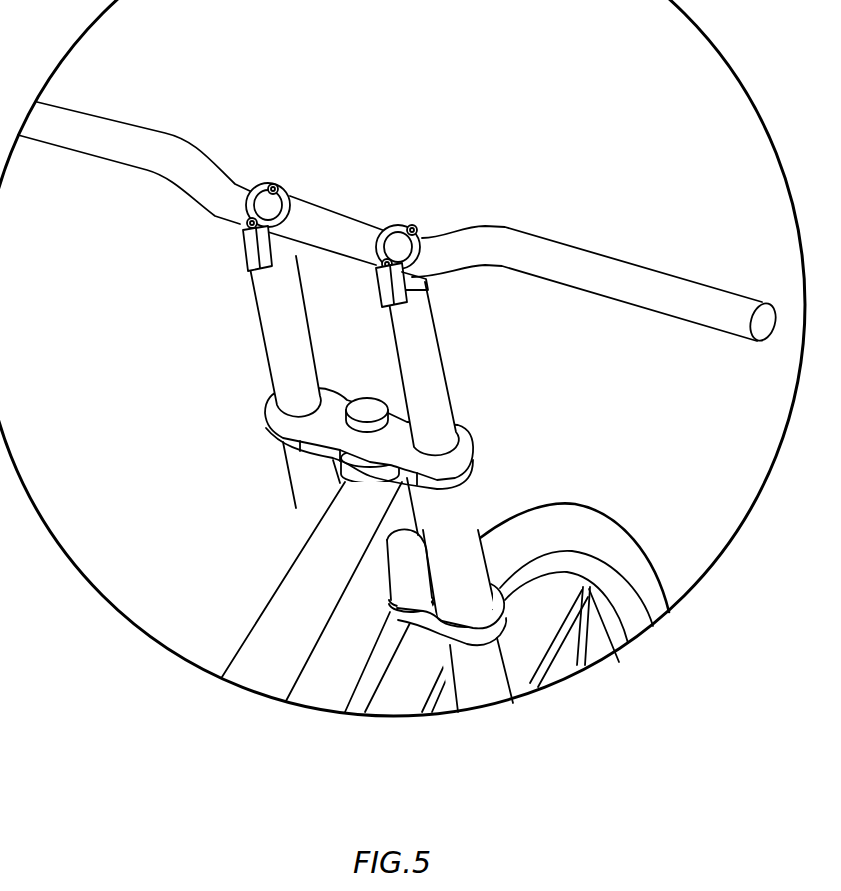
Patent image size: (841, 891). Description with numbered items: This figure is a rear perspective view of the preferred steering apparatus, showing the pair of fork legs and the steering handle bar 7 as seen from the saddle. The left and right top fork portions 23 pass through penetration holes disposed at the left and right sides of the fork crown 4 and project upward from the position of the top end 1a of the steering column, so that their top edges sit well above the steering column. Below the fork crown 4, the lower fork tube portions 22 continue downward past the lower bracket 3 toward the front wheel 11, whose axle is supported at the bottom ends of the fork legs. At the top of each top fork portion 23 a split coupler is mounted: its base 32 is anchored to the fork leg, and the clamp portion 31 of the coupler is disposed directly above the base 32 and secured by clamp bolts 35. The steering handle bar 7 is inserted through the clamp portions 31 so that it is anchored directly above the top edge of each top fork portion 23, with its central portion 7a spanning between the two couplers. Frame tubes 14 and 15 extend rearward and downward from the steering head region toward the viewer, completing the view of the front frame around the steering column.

The steering handle bar 7 is at (399, 211).
The handlebar central portion 7a is at (335, 224).
The handlebar clamp 31 is at (262, 188).
The clamp bolt 35 is at (280, 184).
The split coupler base 32 is at (234, 256).
The top fork portion 23 is at (273, 338).
The fork outer tube 22 is at (300, 496).
The top end of the steering column 1a is at (366, 396).
The fork crown 4 is at (475, 457).
The lower bracket 3 is at (498, 620).
The front wheel 11 is at (622, 534).
The main frame tube 14 is at (297, 588).
The down frame tube 15 is at (320, 675).